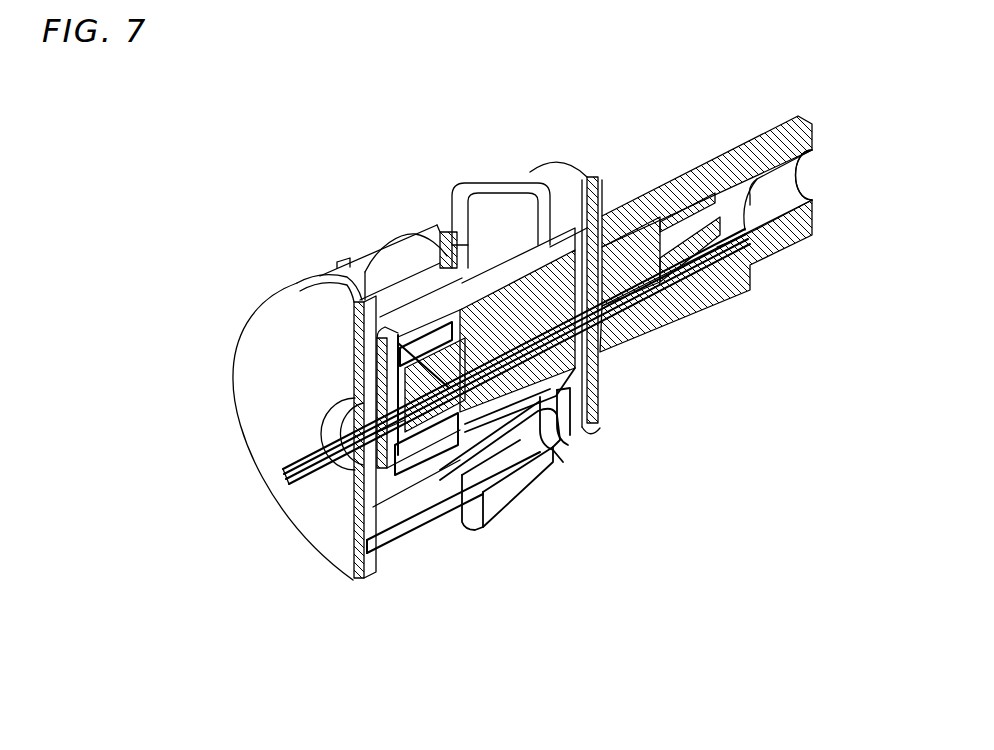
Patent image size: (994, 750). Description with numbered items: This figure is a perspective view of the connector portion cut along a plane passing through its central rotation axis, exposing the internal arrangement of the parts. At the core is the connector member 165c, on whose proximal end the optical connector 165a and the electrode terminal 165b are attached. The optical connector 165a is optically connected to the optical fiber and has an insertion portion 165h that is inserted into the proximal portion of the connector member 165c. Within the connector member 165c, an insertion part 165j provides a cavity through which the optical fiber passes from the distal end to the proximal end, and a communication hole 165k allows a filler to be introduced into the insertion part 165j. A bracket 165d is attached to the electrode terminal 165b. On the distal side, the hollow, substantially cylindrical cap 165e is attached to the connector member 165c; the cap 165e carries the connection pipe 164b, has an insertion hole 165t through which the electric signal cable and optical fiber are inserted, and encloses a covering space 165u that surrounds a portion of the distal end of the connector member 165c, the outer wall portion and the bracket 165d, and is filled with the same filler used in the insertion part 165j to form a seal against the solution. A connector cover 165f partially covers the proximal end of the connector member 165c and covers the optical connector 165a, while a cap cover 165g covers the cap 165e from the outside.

The connection pipe 164b is at (288, 485).
The optical connector 165a is at (813, 190).
The electrode terminal 165b is at (513, 487).
The connector member 165c is at (455, 230).
The bracket 165d is at (388, 320).
The cap 165e is at (469, 438).
The connector cover 165f is at (640, 320).
The cap cover 165g is at (330, 551).
The insertion portion 165h is at (677, 265).
The insertion part 165j is at (560, 428).
The communication hole 165k is at (600, 375).
The insertion hole 165t is at (397, 483).
The covering space 165u is at (432, 500).